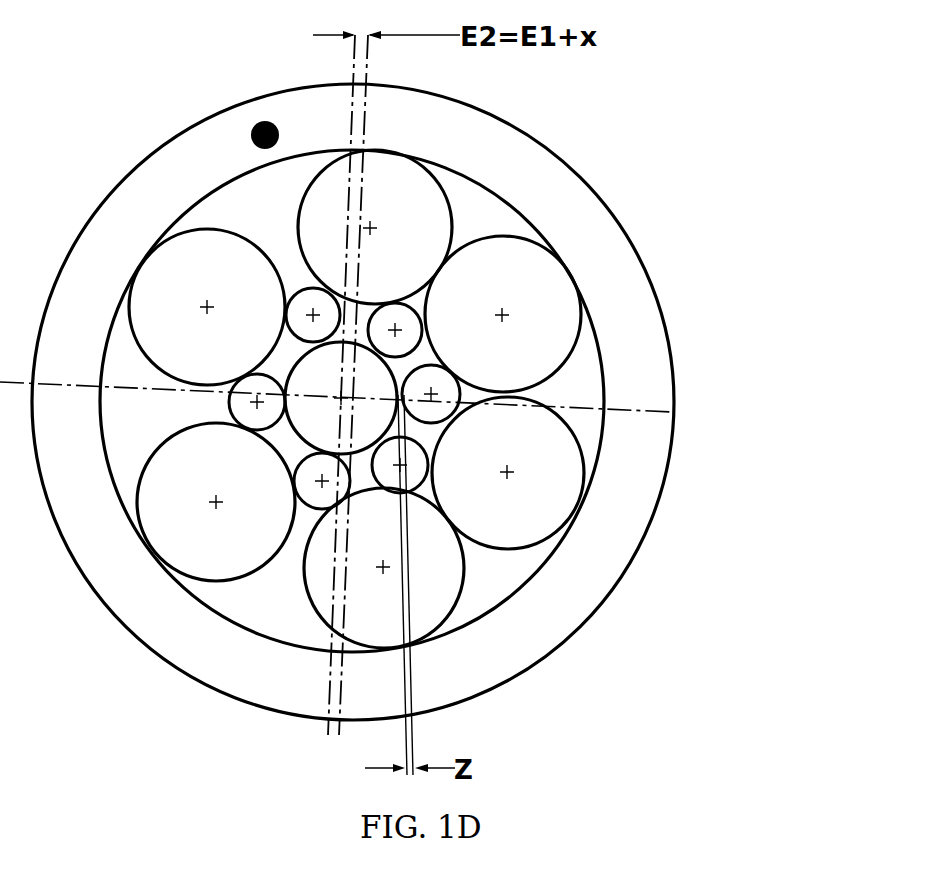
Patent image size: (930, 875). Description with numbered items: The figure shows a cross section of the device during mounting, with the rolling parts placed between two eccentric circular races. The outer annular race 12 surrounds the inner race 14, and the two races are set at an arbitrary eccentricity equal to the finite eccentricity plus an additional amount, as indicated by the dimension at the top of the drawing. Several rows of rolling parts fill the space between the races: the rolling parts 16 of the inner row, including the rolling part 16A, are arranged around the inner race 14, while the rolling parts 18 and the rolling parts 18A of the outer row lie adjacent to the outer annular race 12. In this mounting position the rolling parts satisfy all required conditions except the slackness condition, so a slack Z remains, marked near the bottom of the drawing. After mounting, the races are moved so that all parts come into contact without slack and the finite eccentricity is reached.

The outer annular race 12 is at (252, 125).
The inner race 14 is at (341, 398).
The rolling parts of the inner row 16 is at (328, 398).
The rolling part of the inner row 16A is at (431, 394).
The rolling parts of the outer row 18 is at (212, 405).
The rolling parts of the outer row 18A is at (441, 399).